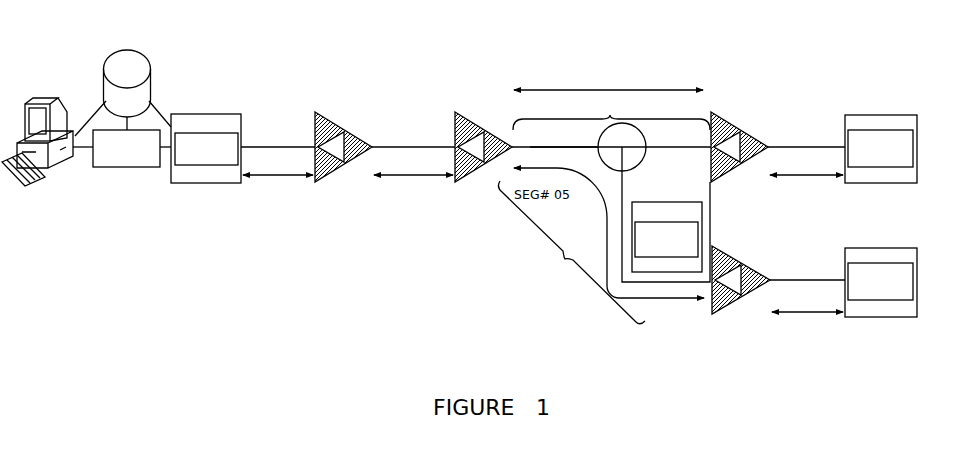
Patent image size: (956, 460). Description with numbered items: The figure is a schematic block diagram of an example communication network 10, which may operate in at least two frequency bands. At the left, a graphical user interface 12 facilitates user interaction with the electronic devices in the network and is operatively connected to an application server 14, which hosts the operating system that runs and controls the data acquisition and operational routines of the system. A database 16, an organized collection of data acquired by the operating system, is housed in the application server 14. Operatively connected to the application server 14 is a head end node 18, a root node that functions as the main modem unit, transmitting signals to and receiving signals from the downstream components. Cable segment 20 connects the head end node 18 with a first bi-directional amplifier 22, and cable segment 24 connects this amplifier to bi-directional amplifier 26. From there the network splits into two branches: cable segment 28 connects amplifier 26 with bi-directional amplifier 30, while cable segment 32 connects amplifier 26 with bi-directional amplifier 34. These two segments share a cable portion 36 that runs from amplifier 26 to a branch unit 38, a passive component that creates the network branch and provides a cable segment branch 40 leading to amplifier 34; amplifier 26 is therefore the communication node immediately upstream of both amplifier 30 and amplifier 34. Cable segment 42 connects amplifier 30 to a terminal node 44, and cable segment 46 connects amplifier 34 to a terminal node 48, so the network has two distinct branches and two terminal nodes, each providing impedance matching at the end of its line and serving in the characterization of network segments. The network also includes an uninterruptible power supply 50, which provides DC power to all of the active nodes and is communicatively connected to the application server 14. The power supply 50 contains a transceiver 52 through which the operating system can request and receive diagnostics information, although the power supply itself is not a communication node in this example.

The communication network 10 is at (293, 252).
The graphical user interface 12 is at (56, 166).
The application server 14 is at (130, 168).
The database 16 is at (146, 55).
The head end node 18 is at (241, 114).
The cable segment 20 is at (272, 145).
The bi-directional amplifier 22 is at (345, 132).
The cable segment 24 is at (401, 145).
The bi-directional amplifier 26 is at (477, 130).
The cable segment 28 is at (610, 116).
The bi-directional amplifier 30 is at (742, 132).
The cable segment 32 is at (571, 252).
The bi-directional amplifier 34 is at (725, 311).
The cable portion 36 is at (537, 146).
The branch unit 38 is at (625, 150).
The cable segment branch 40 is at (622, 183).
The cable segment 42 is at (797, 145).
The terminal node 44 is at (847, 115).
The cable segment 46 is at (795, 278).
The terminal node 48 is at (847, 248).
The uninterruptible power supply 50 is at (702, 203).
The transceiver 52 is at (673, 258).